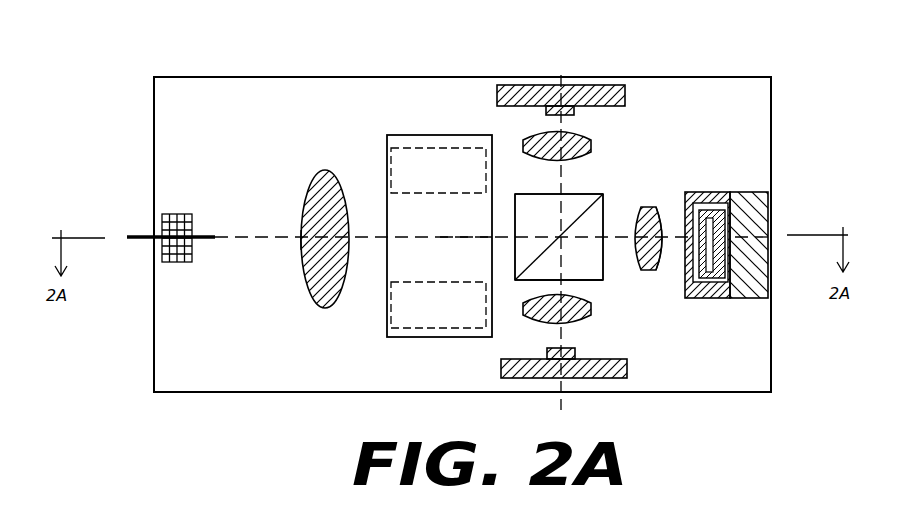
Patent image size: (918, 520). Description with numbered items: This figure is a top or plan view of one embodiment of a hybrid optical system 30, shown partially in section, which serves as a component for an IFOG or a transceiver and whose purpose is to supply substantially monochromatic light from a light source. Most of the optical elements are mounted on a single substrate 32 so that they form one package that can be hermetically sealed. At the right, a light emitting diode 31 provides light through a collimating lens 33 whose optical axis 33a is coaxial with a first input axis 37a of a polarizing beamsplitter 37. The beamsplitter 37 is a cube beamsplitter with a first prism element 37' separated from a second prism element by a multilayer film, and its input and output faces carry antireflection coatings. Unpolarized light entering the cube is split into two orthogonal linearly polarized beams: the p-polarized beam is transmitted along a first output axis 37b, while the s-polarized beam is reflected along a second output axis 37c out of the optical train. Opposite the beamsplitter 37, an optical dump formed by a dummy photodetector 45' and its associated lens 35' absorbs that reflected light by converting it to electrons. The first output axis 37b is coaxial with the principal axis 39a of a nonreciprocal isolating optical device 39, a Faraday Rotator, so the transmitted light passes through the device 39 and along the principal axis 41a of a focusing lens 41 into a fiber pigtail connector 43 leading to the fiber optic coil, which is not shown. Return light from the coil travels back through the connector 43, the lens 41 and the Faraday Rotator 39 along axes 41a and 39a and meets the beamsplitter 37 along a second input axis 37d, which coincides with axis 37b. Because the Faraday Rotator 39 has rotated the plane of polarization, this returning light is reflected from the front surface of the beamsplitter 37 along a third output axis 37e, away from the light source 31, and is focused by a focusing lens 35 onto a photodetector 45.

The hybrid optical system 30 is at (862, 55).
The light emitting diode 31 is at (686, 224).
The substrate 32 is at (686, 96).
The collimating lens 33 is at (647, 206).
The optical axis 33a is at (684, 238).
The focusing lens 35 is at (576, 146).
The lens 35' is at (588, 311).
The polarizing beamsplitter 37 is at (552, 223).
The first prism element 37' is at (559, 237).
The first input axis 37a is at (616, 232).
The first output axis 37b is at (508, 240).
The second output axis 37c is at (562, 194).
The second input axis 37d is at (485, 375).
The third output axis 37e is at (577, 290).
The nonreciprocal isolating optical device 39 is at (422, 133).
The principal axis 39a is at (447, 240).
The focusing lens 41 is at (322, 169).
The principal axis 41a is at (298, 242).
The fiber pigtail connector 43 is at (211, 236).
The photodetector 45 is at (561, 108).
The dummy photodetector 45' is at (564, 357).